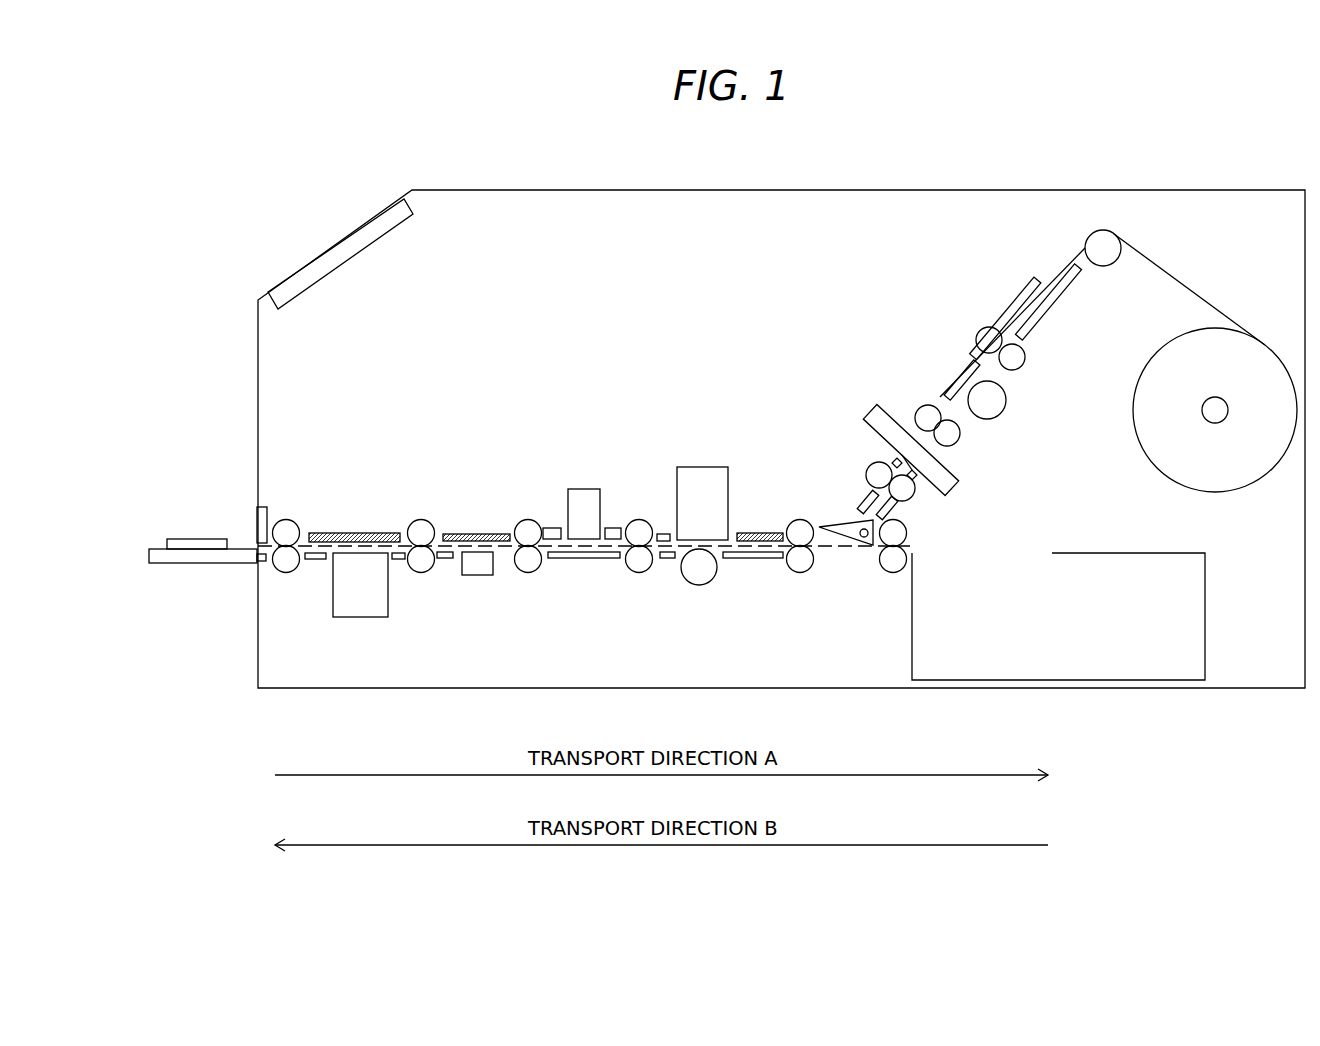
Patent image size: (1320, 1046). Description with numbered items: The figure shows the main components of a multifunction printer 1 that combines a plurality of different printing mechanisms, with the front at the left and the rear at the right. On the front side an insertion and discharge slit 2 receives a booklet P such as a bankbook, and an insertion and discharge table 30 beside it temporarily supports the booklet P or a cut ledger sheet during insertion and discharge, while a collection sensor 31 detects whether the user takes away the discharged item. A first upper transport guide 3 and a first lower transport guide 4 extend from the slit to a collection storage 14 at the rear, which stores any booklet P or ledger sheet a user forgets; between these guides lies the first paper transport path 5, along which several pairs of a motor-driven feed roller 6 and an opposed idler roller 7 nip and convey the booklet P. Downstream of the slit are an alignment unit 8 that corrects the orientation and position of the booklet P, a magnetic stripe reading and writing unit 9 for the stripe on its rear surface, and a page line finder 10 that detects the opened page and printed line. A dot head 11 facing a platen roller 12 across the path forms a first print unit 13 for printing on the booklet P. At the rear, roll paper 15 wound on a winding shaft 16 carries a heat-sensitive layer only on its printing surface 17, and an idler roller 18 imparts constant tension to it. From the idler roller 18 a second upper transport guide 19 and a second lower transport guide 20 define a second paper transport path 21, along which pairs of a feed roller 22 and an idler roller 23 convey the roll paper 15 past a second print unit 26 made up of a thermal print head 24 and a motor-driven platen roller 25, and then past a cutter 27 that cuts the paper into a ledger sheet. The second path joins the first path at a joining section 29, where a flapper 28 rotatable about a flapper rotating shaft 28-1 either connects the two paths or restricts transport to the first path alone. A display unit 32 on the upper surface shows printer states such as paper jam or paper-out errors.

The multifunction printer 1 is at (783, 190).
The insertion and discharge slit 2 is at (252, 545).
The first upper transport guide 3 is at (355, 532).
The first lower transport guide 4 is at (263, 562).
The first paper transport path 5 is at (305, 545).
The feed roller 6 is at (284, 519).
The idler roller 7 is at (287, 573).
The alignment unit 8 is at (350, 618).
The magnetic stripe reading and writing unit 9 is at (472, 576).
The page line finder 10 is at (578, 488).
The dot head 11 is at (698, 466).
The platen roller 12 is at (698, 586).
The first print unit 13 is at (648, 438).
The collection storage 14 is at (1205, 612).
The roll paper 15 is at (1199, 426).
The winding shaft 16 is at (1203, 415).
The printing surface 17 is at (1192, 285).
The idler roller 18 is at (1104, 262).
The second upper transport guide 19 is at (1032, 290).
The second lower transport guide 20 is at (1058, 312).
The second paper transport path 21 is at (1090, 243).
The feed roller 22 is at (985, 328).
The idler roller 23 is at (1025, 363).
The thermal print head 24 is at (956, 370).
The platen roller 25 is at (1000, 395).
The second print unit 26 is at (948, 374).
The cutter 27 is at (872, 408).
The flapper 28 is at (857, 574).
The flapper rotating shaft 28-1 is at (866, 540).
The joining section 29 is at (852, 584).
The insertion and discharge table 30 is at (170, 564).
The collection sensor 31 is at (257, 505).
The display unit 32 is at (392, 203).
The booklet P is at (180, 540).